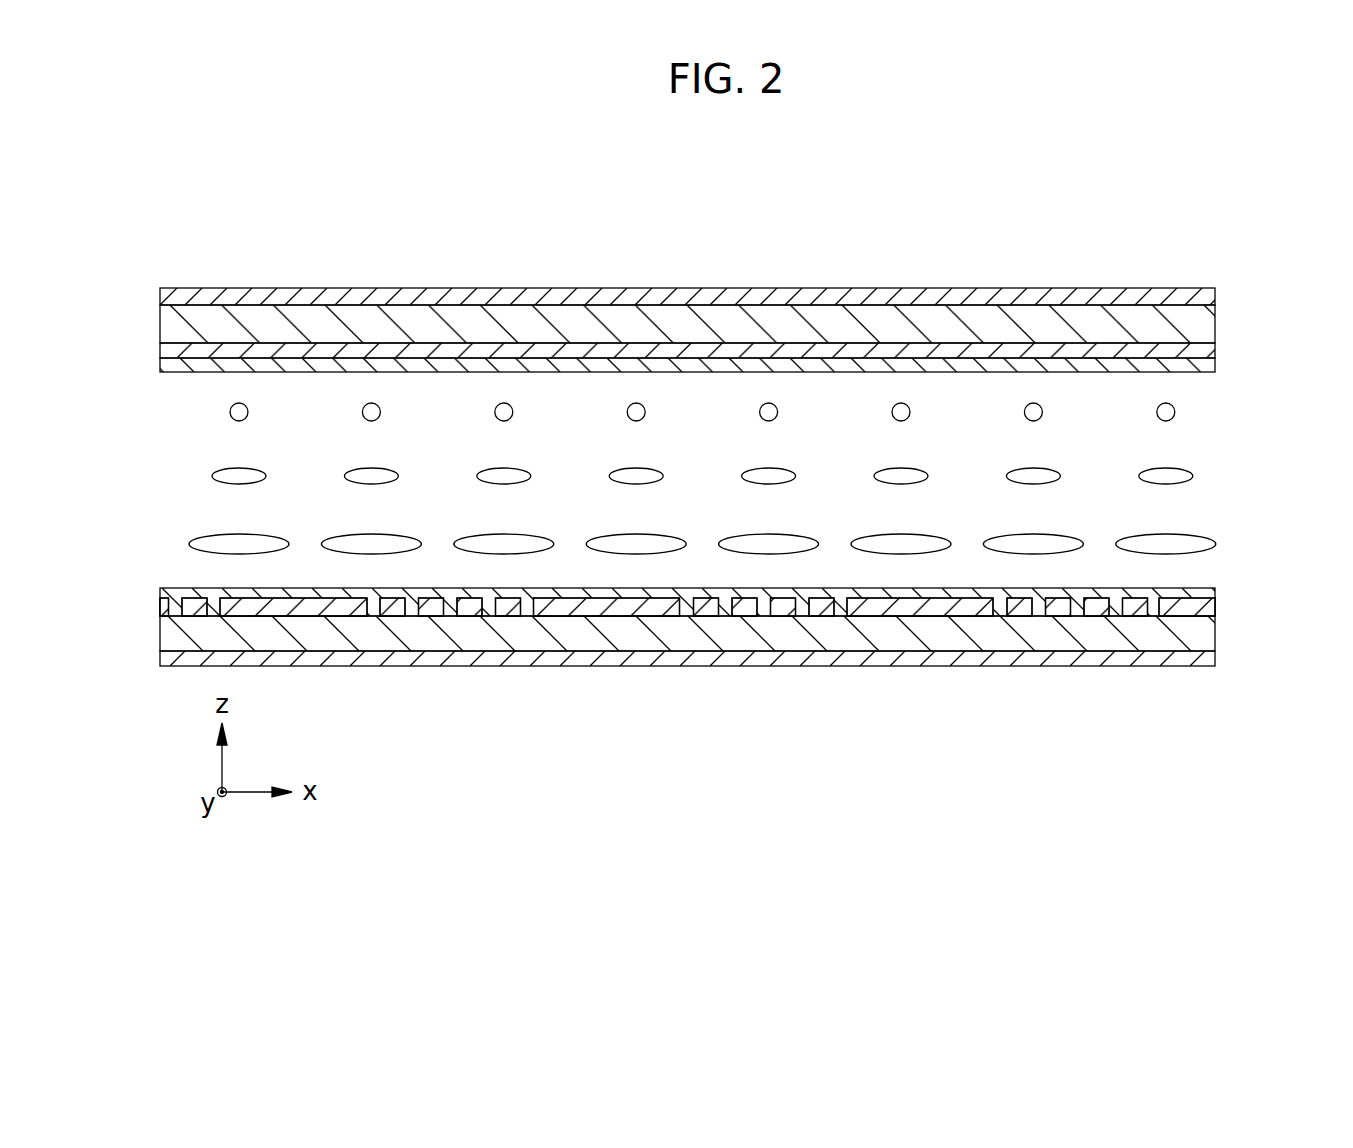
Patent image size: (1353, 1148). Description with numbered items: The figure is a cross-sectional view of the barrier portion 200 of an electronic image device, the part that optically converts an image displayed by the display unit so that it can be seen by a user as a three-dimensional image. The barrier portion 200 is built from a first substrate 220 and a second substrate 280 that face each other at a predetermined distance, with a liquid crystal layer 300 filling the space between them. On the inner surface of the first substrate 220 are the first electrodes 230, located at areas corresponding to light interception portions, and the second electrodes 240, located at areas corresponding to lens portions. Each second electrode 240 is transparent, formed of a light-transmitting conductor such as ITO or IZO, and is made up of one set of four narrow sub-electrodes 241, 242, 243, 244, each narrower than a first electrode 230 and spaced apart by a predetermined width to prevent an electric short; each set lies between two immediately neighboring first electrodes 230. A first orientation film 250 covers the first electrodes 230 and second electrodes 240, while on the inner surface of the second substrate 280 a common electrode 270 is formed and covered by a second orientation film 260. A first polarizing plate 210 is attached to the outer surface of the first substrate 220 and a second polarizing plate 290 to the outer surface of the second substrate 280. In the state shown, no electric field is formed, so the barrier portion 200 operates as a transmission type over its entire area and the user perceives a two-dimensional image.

The barrier portion 200 is at (706, 237).
The first polarizing plate 210 is at (1218, 660).
The first substrate 220 is at (1218, 632).
The first electrode 230 is at (928, 612).
The second electrode 240 is at (757, 704).
The sub-electrode 241 is at (700, 612).
The sub-electrode 242 is at (742, 612).
The sub-electrode 243 is at (775, 612).
The sub-electrode 244 is at (817, 681).
The first orientation film 250 is at (1218, 592).
The second orientation film 260 is at (1218, 365).
The common electrode 270 is at (1218, 350).
The second substrate 280 is at (1218, 323).
The second polarizing plate 290 is at (1218, 297).
The liquid crystal layer 300 is at (1228, 379).